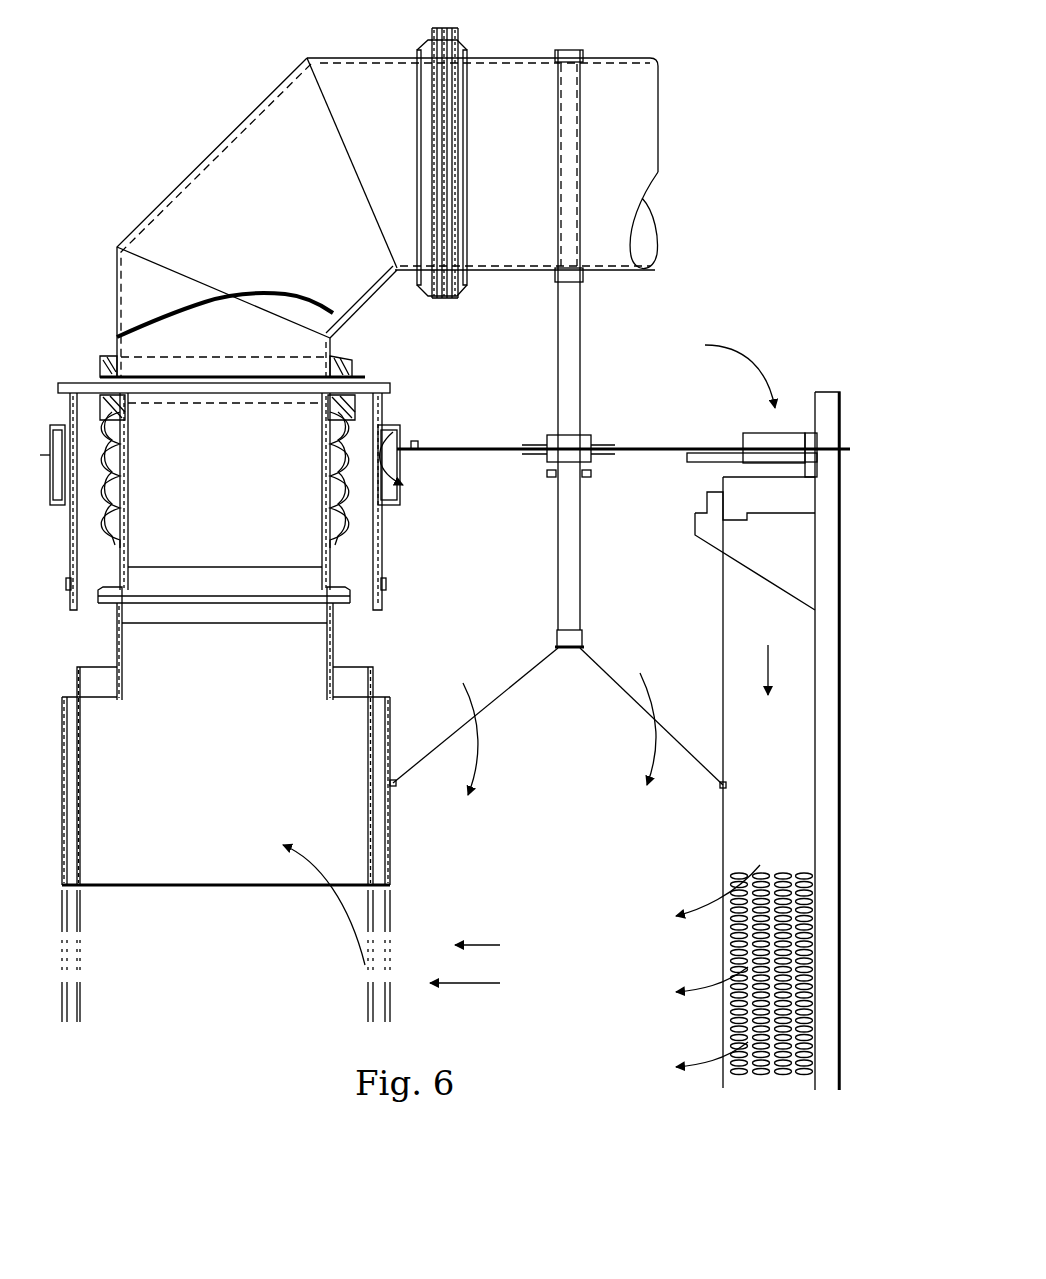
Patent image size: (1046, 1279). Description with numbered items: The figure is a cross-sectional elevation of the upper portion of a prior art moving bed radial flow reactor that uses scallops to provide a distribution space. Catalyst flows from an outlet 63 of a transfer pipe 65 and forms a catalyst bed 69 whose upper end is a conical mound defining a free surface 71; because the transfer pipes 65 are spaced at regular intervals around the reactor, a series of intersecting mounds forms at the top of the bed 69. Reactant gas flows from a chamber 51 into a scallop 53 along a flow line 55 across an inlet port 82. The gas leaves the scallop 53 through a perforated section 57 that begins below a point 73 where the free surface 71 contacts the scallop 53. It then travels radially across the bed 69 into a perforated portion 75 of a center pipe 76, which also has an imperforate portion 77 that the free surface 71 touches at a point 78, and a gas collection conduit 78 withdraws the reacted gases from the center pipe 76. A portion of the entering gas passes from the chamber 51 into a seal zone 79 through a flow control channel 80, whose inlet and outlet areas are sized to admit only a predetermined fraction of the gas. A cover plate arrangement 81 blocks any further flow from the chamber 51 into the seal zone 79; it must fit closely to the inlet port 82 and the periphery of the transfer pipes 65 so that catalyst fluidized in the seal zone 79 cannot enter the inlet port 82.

The chamber 51 is at (528, 329).
The scallop 53 is at (723, 606).
The flow line 55 is at (766, 648).
The perforated section 57 is at (806, 918).
The outlet 63 is at (583, 647).
The transfer pipe 65 is at (584, 328).
The catalyst bed 69 is at (585, 940).
The free surface 71 is at (530, 668).
The point 73 is at (727, 784).
The perforated portion 75 is at (392, 1005).
The center pipe 76 is at (406, 887).
The imperforate portion 77 is at (392, 831).
The gas collection conduit 78 is at (498, 58).
The seal zone 79 is at (511, 532).
The flow control channel 80 is at (402, 462).
The cover plate arrangement 81 is at (494, 446).
The inlet port 82 is at (755, 462).